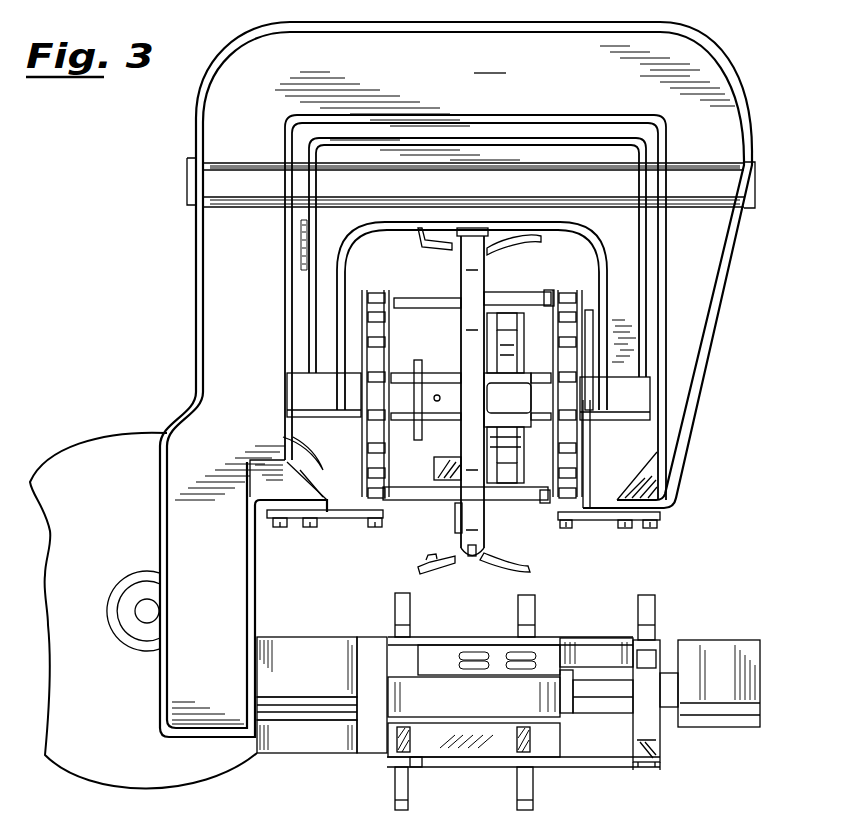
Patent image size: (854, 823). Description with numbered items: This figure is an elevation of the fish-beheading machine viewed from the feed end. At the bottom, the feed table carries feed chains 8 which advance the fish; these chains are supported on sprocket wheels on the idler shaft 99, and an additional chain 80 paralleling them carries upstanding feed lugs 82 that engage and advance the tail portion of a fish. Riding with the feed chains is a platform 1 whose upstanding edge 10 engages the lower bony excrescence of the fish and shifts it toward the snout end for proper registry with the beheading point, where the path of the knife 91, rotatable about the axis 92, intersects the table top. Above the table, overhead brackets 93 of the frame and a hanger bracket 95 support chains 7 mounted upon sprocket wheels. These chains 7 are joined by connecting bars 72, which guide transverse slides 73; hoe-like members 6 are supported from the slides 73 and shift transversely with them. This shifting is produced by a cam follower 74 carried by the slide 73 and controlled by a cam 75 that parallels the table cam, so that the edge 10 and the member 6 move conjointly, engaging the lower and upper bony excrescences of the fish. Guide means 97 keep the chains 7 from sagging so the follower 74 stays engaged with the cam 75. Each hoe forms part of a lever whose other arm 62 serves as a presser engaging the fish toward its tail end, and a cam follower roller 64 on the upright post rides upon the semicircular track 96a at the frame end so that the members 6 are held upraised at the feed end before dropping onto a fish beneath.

The platform 1 is at (443, 660).
The hoe-like member 6 is at (417, 393).
The chain 7 is at (371, 296).
The feed chain 8 is at (417, 735).
The upstanding edge 10 is at (417, 631).
The lever arm 62 is at (531, 242).
The cam follower roller 64 is at (469, 561).
The connecting bar 72 is at (417, 299).
The transverse slide 73 is at (517, 295).
The cam follower 74 is at (501, 480).
The cam 75 is at (437, 468).
The additional chain 80 is at (659, 641).
The feed lug 82 is at (639, 607).
The knife 91 is at (330, 466).
The axis 92 is at (147, 601).
The overhead bracket 93 is at (457, 379).
The hanger bracket 95 is at (621, 257).
The semicircular track 96a is at (456, 520).
The guide means 97 is at (587, 318).
The idler shaft 99 is at (613, 707).